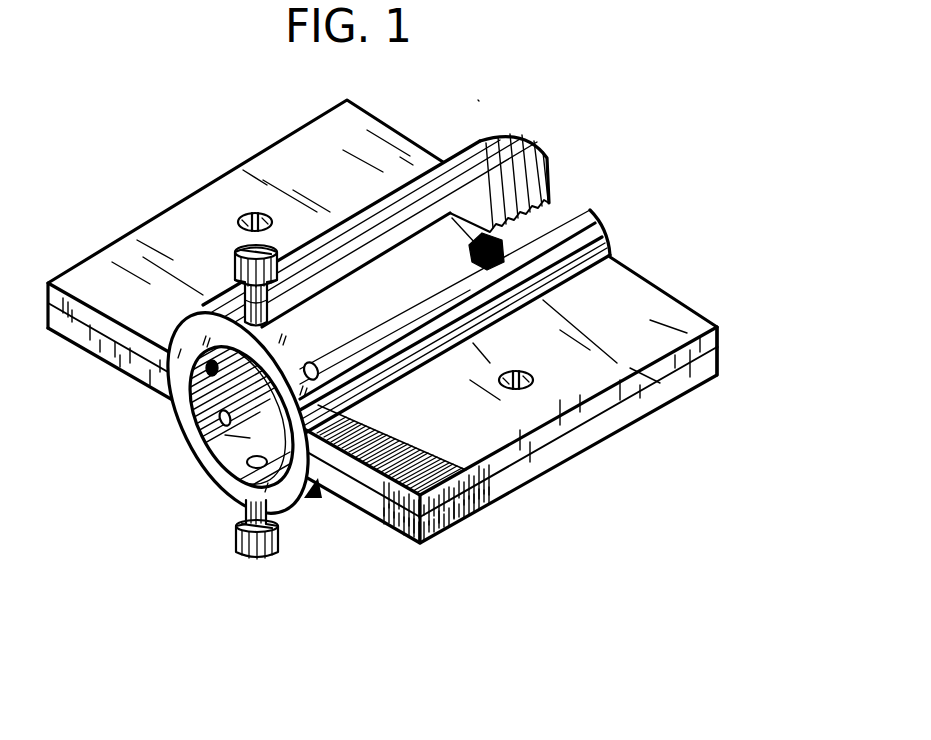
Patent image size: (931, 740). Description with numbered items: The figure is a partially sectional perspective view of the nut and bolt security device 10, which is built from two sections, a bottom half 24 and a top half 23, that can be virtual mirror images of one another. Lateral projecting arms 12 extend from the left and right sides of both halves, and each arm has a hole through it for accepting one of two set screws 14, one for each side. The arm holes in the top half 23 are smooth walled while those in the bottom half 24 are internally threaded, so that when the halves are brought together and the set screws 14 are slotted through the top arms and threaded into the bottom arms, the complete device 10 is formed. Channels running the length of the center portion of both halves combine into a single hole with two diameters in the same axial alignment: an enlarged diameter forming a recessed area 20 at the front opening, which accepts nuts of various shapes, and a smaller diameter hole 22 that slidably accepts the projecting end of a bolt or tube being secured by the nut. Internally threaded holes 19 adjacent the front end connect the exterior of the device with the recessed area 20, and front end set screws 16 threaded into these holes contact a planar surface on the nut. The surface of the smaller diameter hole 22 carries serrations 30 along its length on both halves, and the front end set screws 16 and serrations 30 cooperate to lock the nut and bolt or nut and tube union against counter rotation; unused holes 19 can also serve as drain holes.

The nut and bolt security device 10 is at (478, 98).
The lateral projecting arms 12 is at (304, 130).
The set screws 14 is at (237, 223).
The front end set screws 16 is at (236, 262).
The internally threaded holes 19 is at (311, 362).
The recessed area 20 is at (208, 458).
The smaller diameter hole 22 is at (576, 205).
The top half 23 is at (720, 338).
The bottom half 24 is at (707, 367).
The serrations 30 is at (551, 205).